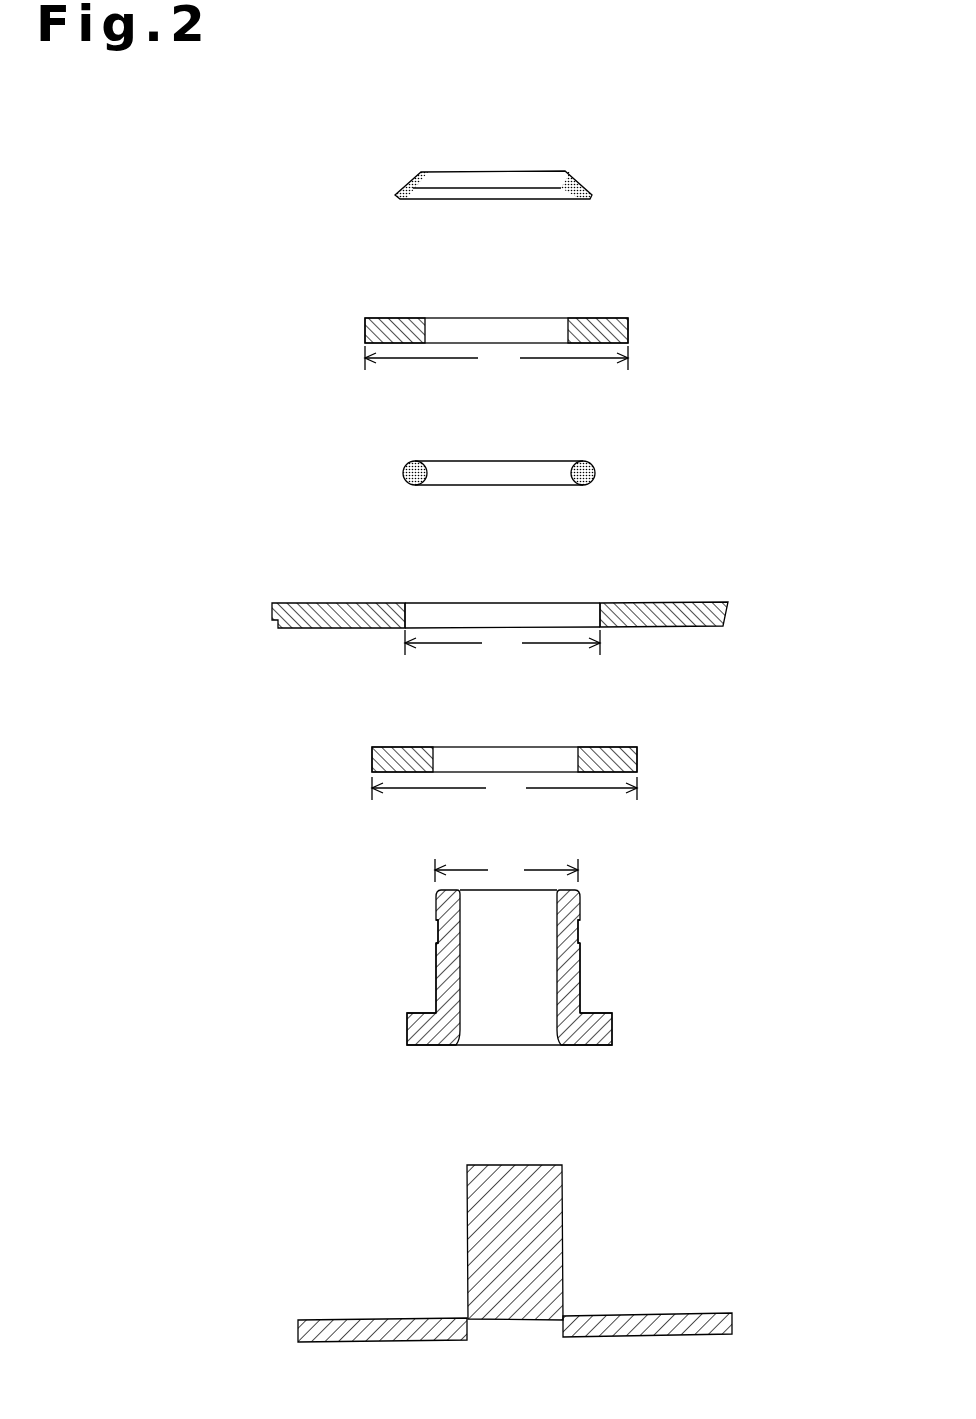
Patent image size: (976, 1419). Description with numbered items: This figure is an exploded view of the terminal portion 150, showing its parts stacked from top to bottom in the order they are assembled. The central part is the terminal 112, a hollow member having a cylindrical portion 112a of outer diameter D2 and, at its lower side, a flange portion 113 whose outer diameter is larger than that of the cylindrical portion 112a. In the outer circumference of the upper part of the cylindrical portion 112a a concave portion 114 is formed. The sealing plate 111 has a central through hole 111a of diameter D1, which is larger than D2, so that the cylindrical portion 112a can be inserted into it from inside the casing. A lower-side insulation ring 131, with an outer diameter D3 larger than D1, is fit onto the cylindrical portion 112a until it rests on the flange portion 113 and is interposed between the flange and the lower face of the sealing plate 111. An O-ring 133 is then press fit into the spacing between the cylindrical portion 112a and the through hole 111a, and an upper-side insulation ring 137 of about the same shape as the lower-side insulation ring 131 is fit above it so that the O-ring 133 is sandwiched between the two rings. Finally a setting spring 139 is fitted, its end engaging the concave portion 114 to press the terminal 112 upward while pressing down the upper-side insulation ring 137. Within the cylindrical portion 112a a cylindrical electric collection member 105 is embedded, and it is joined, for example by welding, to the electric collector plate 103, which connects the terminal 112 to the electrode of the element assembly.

The terminal portion 150 is at (523, 118).
The setting spring 139 is at (592, 191).
The upper-side insulation ring 137 is at (629, 331).
The O-ring 133 is at (596, 471).
The sealing plate 111 is at (692, 628).
The through hole 111a is at (583, 591).
The lower-side insulation ring 131 is at (638, 757).
The terminal 112 is at (582, 893).
The concave portion 114 is at (580, 931).
The cylindrical portion 112a is at (580, 985).
The flange portion 113 is at (612, 1027).
The electric collection member 105 is at (563, 1208).
The electric collector plate 103 is at (710, 1313).